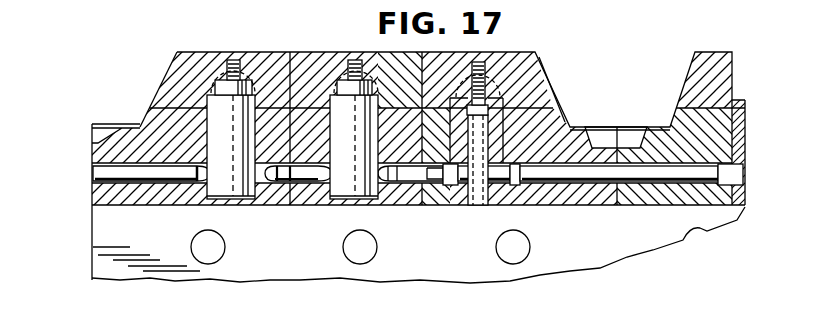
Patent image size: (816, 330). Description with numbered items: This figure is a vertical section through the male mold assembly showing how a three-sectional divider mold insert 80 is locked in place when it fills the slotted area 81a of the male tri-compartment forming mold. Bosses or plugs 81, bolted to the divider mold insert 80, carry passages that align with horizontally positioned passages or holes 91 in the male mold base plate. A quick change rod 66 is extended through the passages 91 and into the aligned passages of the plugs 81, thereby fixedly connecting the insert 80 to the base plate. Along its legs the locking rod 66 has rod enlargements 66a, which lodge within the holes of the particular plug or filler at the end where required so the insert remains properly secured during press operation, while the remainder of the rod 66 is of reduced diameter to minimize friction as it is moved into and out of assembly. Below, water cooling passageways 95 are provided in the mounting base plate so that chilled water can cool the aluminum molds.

The three-sectional divider mold insert 80 is at (513, 50).
The bosses or plugs 81 is at (342, 110).
The slotted area 81a is at (166, 106).
The horizontally positioned passages or holes 91 is at (92, 180).
The quick change rods 66 is at (141, 173).
The rod enlargements 66a is at (483, 172).
The water cooling passageways 95 is at (370, 258).